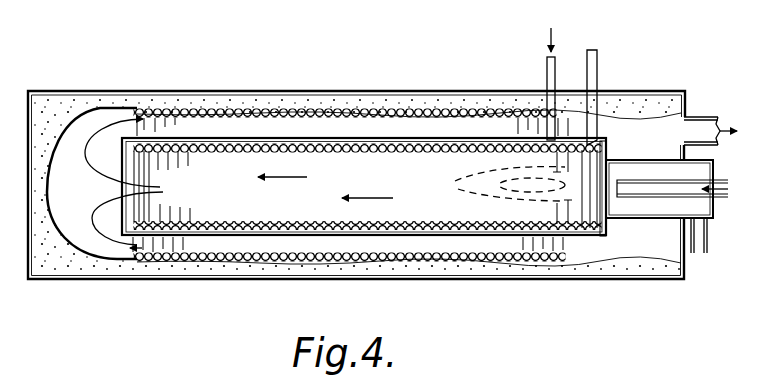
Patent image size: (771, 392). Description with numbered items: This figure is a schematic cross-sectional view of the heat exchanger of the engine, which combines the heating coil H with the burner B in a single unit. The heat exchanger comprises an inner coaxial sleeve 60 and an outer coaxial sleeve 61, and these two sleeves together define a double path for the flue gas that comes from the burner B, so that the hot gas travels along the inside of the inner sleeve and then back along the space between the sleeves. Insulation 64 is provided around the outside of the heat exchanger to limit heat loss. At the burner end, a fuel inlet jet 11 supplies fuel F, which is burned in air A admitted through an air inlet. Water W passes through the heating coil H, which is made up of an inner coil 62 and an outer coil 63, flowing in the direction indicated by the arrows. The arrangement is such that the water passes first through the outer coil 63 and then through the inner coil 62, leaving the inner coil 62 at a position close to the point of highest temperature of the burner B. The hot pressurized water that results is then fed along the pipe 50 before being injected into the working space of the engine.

The pipe 50 is at (598, 70).
The inner coaxial sleeve 60 is at (607, 219).
The fuel supply pipe 11 is at (655, 198).
The outer coaxial sleeve 61 is at (455, 281).
The inner coil 62 is at (209, 231).
The outer coil 63 is at (238, 262).
The insulation 64 is at (51, 268).
The heating coil H is at (438, 132).
The water W is at (592, 43).
The burner B is at (605, 178).
The fuel F is at (724, 189).
The air A is at (699, 247).